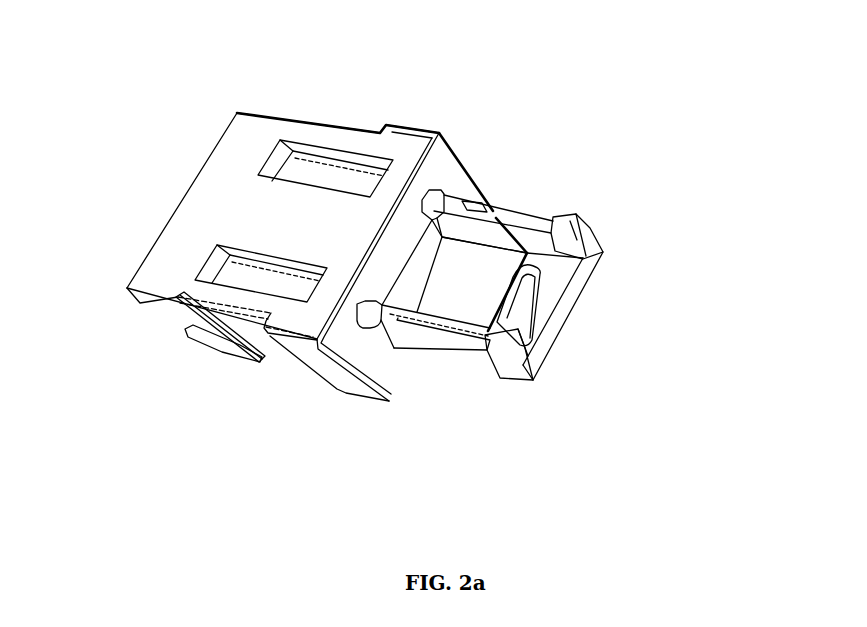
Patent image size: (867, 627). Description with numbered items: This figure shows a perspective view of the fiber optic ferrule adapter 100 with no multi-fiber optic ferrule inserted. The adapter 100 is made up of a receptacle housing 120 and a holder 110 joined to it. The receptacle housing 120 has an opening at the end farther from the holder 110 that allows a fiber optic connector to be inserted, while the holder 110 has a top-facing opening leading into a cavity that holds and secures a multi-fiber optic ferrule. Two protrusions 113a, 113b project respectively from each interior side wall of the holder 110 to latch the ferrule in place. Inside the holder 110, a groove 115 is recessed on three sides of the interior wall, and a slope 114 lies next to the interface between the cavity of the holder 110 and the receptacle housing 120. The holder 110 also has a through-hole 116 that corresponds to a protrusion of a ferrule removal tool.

The fiber optic ferrule adapter 100 is at (384, 249).
The receptacle housing 120 is at (273, 257).
The holder 110 is at (536, 293).
The protrusion 113a is at (474, 241).
The protrusion 113b is at (512, 192).
The slope 114 is at (476, 351).
The groove 115 is at (619, 291).
The through-hole 116 is at (605, 305).